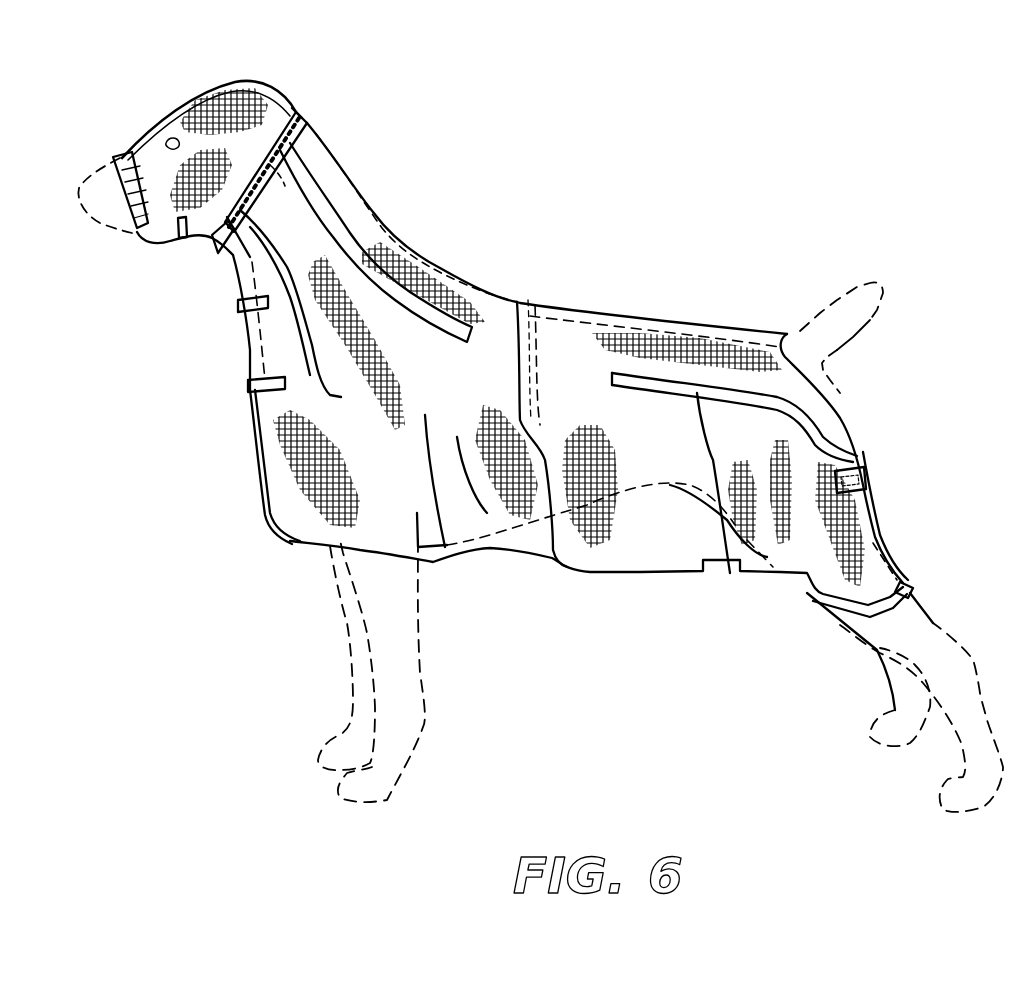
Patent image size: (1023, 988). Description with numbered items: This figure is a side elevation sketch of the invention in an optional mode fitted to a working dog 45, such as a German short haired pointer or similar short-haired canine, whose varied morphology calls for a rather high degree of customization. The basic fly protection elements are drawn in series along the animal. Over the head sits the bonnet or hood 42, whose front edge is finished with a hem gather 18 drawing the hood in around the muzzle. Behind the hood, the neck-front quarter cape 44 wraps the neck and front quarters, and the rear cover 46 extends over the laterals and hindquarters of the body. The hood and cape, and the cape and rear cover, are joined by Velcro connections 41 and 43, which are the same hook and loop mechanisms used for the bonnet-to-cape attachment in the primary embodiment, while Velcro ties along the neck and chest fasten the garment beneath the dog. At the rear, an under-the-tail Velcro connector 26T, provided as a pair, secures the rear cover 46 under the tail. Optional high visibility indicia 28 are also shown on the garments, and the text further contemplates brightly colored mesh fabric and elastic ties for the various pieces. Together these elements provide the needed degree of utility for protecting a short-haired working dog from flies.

The hem gather 18 is at (122, 158).
The bonnet or hood 42 is at (211, 160).
The Velcro connection 41 is at (258, 80).
The Velcro connection 43 is at (310, 124).
The neck-front quarter cape 44 is at (407, 298).
The rear cover 46 is at (662, 332).
The high visibility indicia 28 is at (718, 483).
The under-the-tail Velcro connector 26T is at (870, 479).
The working dog 45 is at (258, 398).